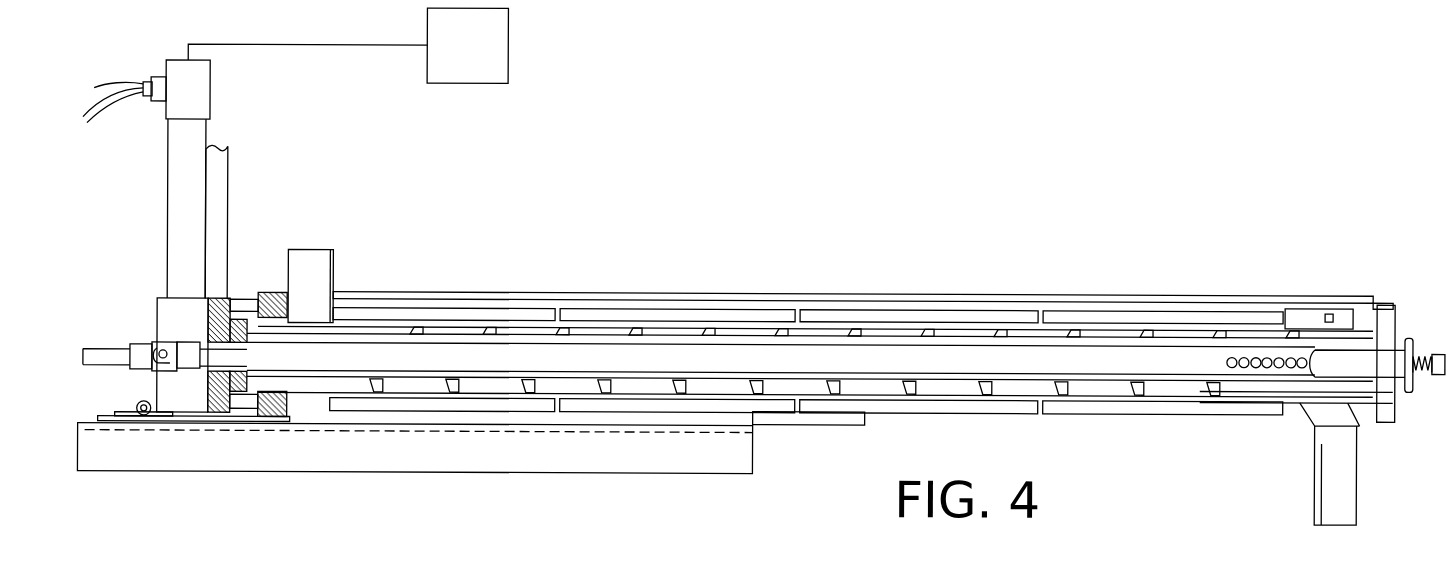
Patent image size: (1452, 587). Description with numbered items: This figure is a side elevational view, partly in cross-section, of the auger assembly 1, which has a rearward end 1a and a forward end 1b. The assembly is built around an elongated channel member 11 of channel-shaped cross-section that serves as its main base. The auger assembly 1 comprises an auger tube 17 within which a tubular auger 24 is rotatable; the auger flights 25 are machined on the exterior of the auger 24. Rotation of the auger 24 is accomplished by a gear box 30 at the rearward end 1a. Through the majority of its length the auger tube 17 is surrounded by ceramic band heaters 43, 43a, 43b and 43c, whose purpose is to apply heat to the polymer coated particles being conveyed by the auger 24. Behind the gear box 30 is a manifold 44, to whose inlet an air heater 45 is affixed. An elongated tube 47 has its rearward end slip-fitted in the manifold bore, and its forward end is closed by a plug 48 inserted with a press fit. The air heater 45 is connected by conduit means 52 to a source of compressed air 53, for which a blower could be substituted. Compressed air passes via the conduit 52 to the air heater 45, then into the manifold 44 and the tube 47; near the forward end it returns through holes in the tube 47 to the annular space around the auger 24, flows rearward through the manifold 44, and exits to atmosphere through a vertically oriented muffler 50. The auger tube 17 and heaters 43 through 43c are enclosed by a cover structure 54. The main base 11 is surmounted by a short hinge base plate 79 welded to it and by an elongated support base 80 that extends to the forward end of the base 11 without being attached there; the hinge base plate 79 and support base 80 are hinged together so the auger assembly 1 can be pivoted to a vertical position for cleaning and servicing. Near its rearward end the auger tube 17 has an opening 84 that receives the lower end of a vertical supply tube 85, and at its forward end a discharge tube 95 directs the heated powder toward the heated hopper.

The auger assembly 1 is at (962, 283).
The rearward end 1a is at (150, 292).
The forward end 1b is at (1403, 290).
The channel member 11 is at (708, 462).
The auger tube 17 is at (413, 318).
The tubular auger 24 is at (527, 327).
The auger flights 25 is at (625, 318).
The gear box 30 is at (217, 410).
The ceramic band heater 43 is at (436, 312).
The ceramic band heater 43a is at (740, 312).
The ceramic band heater 43b is at (985, 312).
The ceramic band heater 43c is at (1095, 312).
The manifold 44 is at (172, 325).
The air heater 45 is at (175, 172).
The elongated tube 47 is at (845, 343).
The plug 48 is at (1340, 358).
The muffler 50 is at (218, 205).
The conduit means 52 is at (310, 45).
The source of compressed air 53 is at (462, 75).
The cover structure 54 is at (700, 278).
The hinge base plate 79 is at (120, 422).
The support base 80 is at (240, 423).
The opening 84 is at (303, 320).
The supply tube 85 is at (333, 265).
The discharge tube 95 is at (1315, 470).